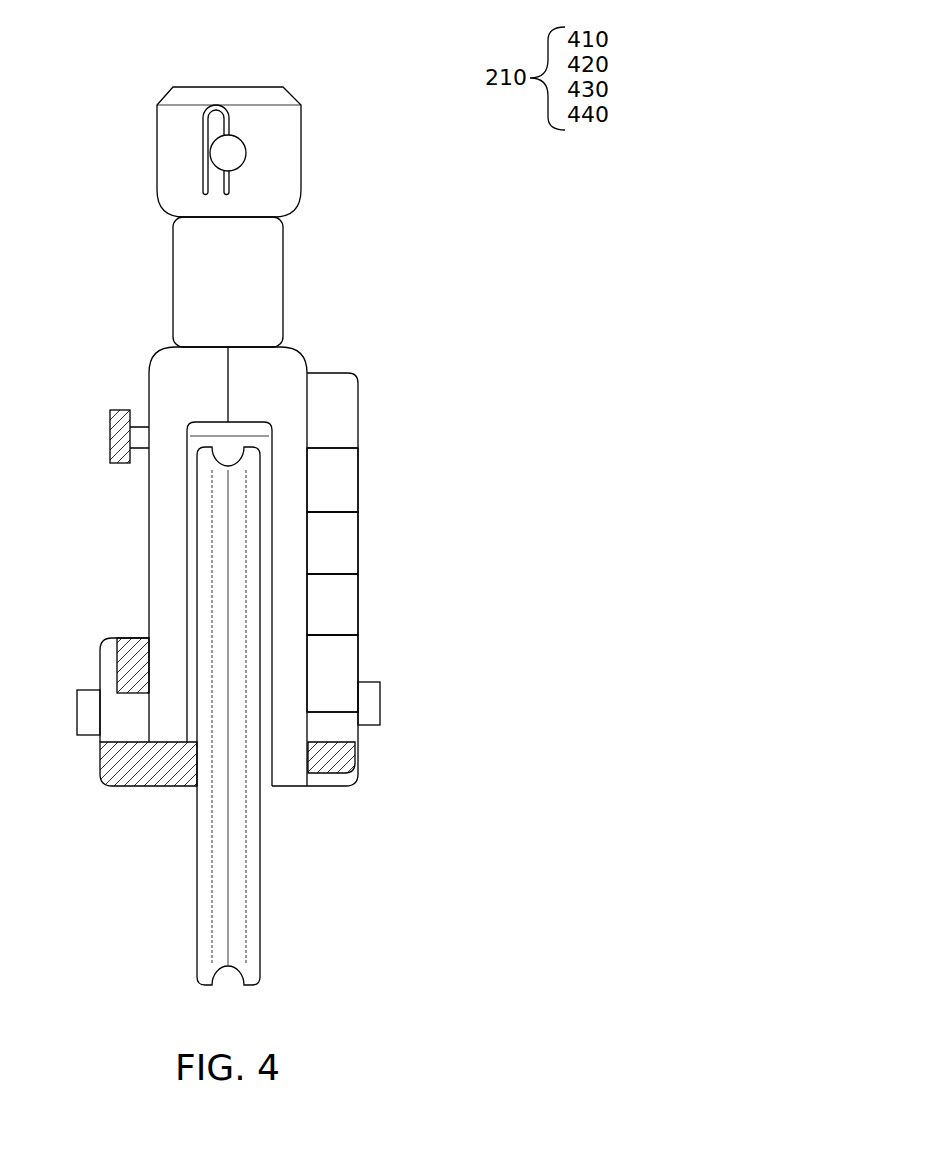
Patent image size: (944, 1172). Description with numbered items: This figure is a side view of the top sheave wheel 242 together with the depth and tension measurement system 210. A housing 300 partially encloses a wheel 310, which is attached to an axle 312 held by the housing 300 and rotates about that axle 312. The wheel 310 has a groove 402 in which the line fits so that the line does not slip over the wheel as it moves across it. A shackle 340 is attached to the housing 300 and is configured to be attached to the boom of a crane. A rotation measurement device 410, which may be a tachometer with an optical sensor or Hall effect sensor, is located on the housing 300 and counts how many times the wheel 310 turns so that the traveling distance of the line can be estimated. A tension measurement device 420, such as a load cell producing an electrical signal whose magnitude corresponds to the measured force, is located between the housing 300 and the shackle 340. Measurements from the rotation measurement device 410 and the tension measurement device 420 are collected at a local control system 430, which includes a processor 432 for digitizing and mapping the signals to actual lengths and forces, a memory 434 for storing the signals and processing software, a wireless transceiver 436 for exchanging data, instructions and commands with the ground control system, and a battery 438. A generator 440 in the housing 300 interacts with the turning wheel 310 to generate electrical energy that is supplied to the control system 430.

The depth and tension measurement system 210 is at (386, 405).
The top sheave wheel 242 is at (266, 927).
The housing 300 is at (130, 346).
The wheel 310 is at (260, 835).
The axle 312 is at (380, 703).
The shackle 340 is at (301, 150).
The groove 402 is at (244, 873).
The rotation measurement device 410 is at (382, 777).
The tension measurement device 420 is at (310, 298).
The local control system 430 is at (423, 578).
The processor 432 is at (350, 478).
The memory 434 is at (350, 540).
The wireless transceiver 436 is at (350, 605).
The battery 438 is at (350, 657).
The generator 440 is at (71, 779).